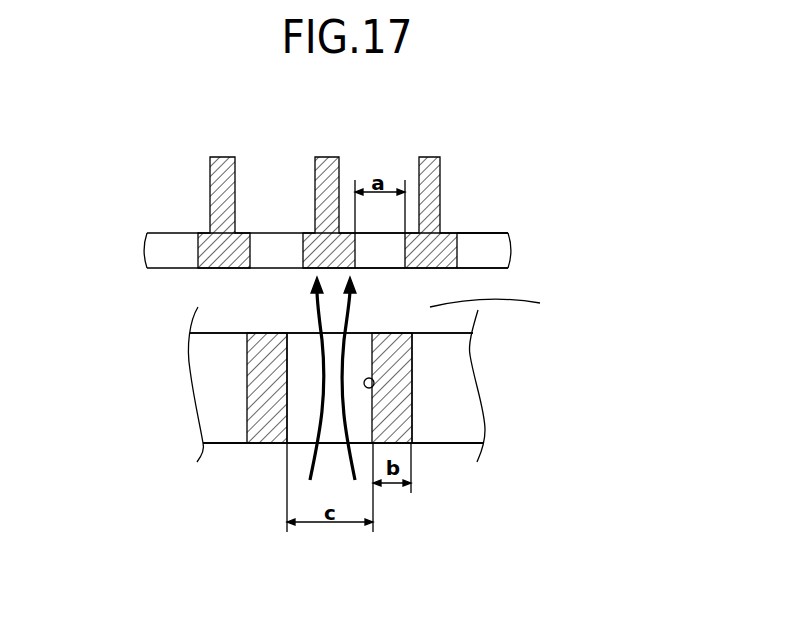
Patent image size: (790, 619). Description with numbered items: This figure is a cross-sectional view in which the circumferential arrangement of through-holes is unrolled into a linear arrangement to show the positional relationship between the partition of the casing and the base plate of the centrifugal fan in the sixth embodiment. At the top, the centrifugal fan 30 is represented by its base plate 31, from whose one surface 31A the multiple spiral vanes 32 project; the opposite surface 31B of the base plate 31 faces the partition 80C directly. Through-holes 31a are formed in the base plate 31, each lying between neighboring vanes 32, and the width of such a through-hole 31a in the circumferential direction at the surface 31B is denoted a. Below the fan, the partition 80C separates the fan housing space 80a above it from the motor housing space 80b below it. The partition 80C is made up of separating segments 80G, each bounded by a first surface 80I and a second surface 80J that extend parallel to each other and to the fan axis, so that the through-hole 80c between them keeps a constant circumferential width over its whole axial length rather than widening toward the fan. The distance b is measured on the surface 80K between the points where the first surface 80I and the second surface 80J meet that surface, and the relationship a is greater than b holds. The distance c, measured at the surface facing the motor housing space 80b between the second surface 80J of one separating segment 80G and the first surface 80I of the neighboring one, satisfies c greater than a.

The centrifugal fan 30 is at (508, 233).
The base plate 31 is at (472, 233).
The one surface of the base plate 31A is at (482, 233).
The opposite surface of the base plate 31B is at (487, 268).
The through-hole 31a is at (387, 248).
The spiral vane 32 is at (440, 172).
The partition 80C is at (210, 360).
The surface of the partition 80K is at (443, 332).
The first surface 80I is at (374, 383).
The second surface 80J is at (303, 328).
The fan housing space 80a is at (540, 303).
The motor housing space 80b is at (215, 458).
The separating segment 80G is at (250, 445).
The through-hole 80c is at (307, 427).